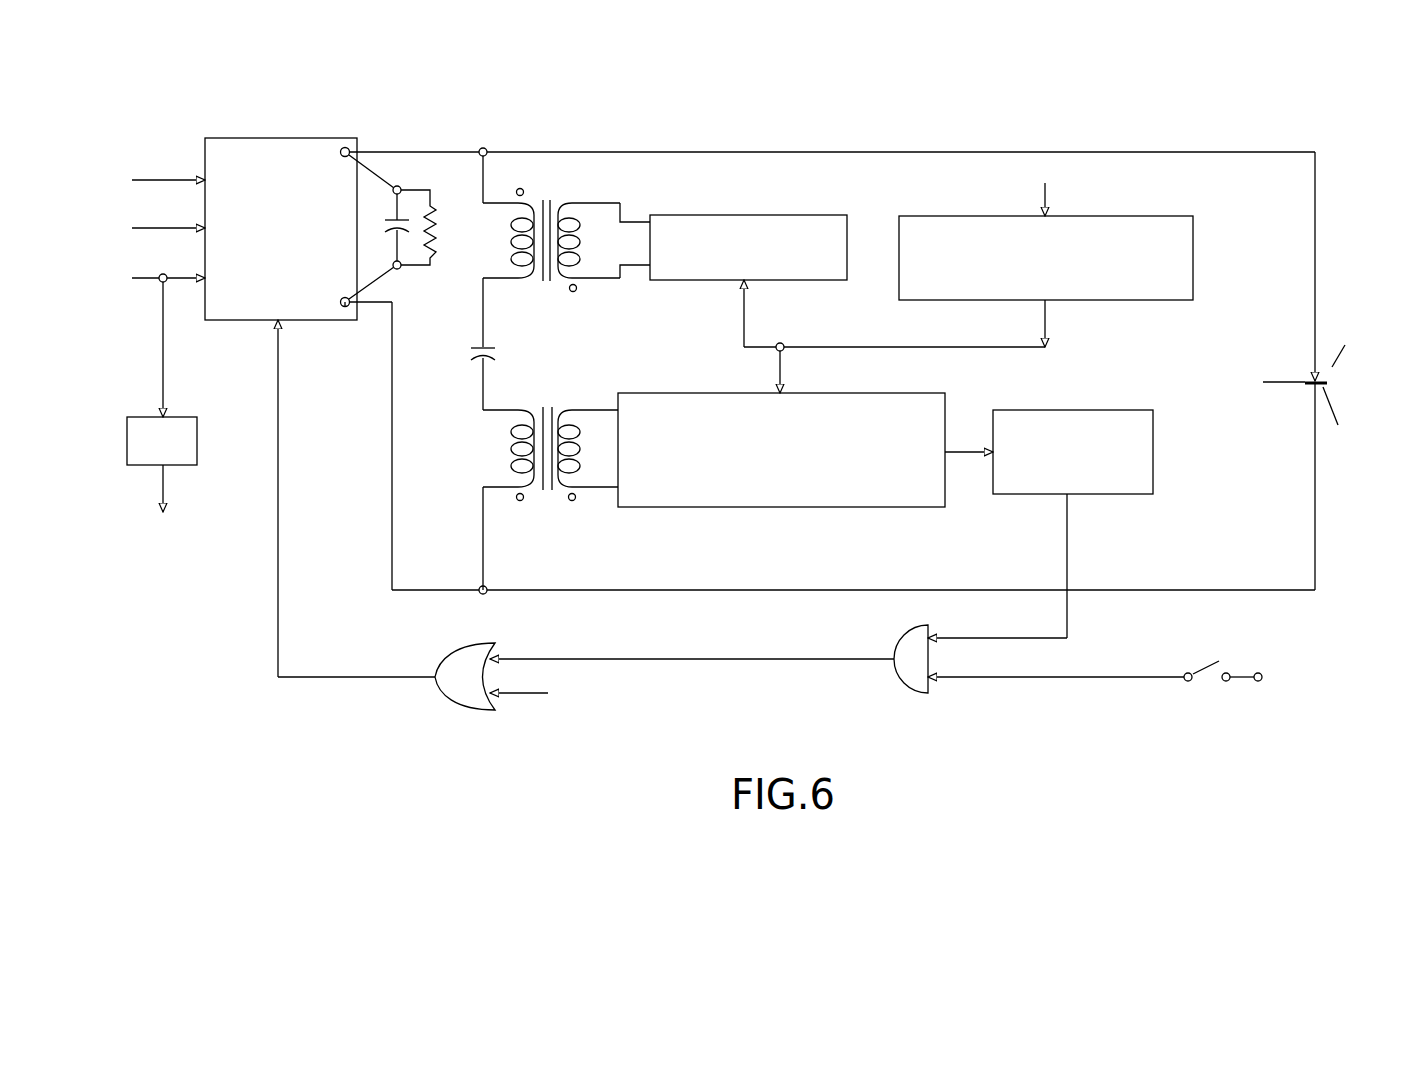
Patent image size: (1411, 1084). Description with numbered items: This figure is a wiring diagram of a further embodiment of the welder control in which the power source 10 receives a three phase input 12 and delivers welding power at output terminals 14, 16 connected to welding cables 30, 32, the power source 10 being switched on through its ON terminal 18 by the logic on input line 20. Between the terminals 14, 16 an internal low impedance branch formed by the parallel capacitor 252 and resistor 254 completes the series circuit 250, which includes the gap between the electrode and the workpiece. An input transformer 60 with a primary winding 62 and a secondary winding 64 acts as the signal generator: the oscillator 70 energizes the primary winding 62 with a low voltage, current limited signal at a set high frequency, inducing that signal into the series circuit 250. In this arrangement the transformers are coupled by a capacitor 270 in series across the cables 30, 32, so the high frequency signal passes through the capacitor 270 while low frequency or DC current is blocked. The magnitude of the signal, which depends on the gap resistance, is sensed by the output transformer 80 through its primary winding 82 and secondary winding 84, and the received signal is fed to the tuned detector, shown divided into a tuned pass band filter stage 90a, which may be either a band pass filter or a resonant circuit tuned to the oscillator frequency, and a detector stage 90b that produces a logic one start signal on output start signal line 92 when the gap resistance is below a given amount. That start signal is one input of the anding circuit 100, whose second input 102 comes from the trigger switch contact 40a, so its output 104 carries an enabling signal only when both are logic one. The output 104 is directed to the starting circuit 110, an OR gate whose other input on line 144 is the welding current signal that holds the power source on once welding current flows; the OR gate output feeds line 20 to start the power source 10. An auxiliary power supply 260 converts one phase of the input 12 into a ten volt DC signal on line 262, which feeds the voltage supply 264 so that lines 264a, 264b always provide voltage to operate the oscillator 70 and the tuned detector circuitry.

The power source 10 is at (304, 136).
The three phase input 12 is at (167, 178).
The output terminal 14 is at (350, 150).
The output terminal 16 is at (347, 308).
The ON terminal 18 is at (288, 322).
The input line 20 is at (353, 680).
The welding cable 30 is at (1162, 152).
The welding cable 32 is at (1226, 590).
The trigger switch contact 40a is at (1221, 683).
The input transformer 60 is at (566, 223).
The primary winding 62 is at (586, 222).
The secondary winding 64 is at (526, 290).
The oscillator 70 is at (771, 215).
The output transformer 80 is at (548, 498).
The primary winding 82 is at (513, 438).
The secondary winding 84 is at (587, 495).
The tuned pass band filter stage 90a is at (942, 392).
The detector stage 90b is at (1143, 494).
The output start signal line 92 is at (1067, 528).
The anding circuit 100 is at (888, 681).
The second input 102 is at (1075, 678).
The output 104 is at (765, 655).
The starting circuit 110 is at (447, 700).
The line 144 is at (517, 695).
The series circuit 250 is at (1266, 150).
The capacitor 252 is at (403, 217).
The resistor 254 is at (427, 252).
The auxiliary power supply 260 is at (197, 425).
The line 262 is at (1049, 197).
The voltage supply 264 is at (1194, 255).
The line 264a is at (744, 322).
The line 264b is at (778, 366).
The capacitor 270 is at (500, 352).